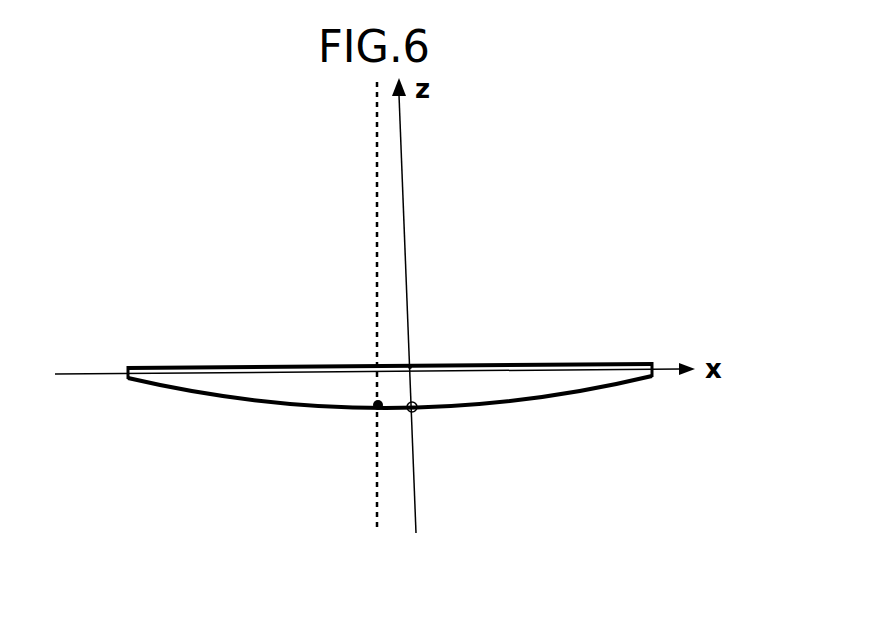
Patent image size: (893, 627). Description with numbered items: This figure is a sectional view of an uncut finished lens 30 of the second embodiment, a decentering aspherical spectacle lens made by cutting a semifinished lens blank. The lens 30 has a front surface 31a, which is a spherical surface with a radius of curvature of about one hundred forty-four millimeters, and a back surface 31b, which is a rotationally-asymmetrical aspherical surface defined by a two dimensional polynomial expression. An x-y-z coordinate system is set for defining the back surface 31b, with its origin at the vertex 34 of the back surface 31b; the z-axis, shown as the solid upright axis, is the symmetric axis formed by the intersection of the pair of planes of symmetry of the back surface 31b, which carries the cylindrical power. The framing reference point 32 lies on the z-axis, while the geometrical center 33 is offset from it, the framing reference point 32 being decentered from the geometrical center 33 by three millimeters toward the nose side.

The uncut finished lens 30 is at (432, 382).
The front surface 31a is at (553, 400).
The back surface 31b is at (163, 367).
The framing reference point 32 is at (413, 410).
The geometrical center 33 is at (378, 407).
The vertex 34 is at (410, 367).